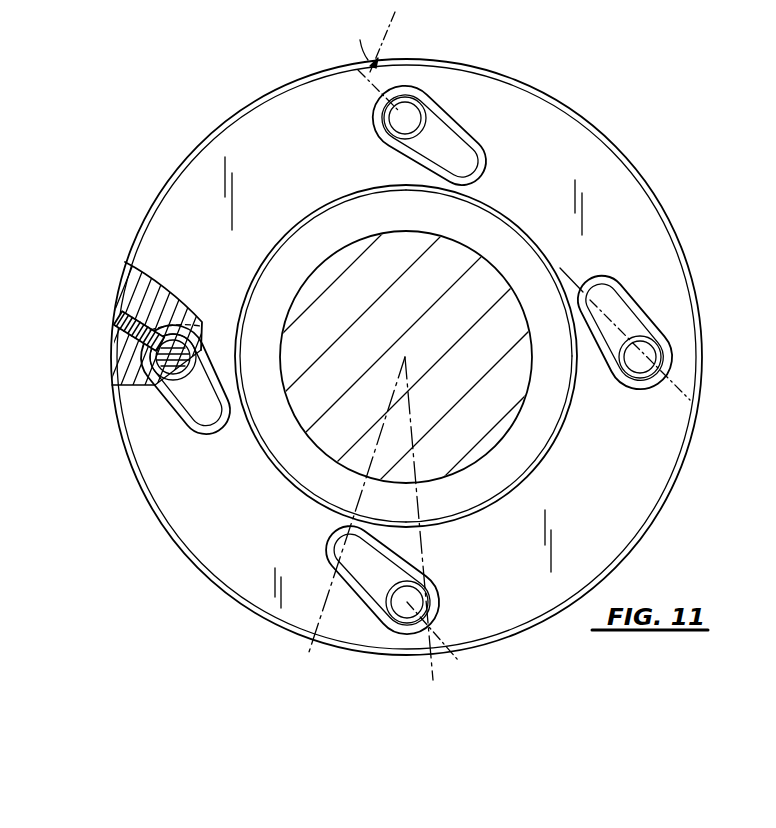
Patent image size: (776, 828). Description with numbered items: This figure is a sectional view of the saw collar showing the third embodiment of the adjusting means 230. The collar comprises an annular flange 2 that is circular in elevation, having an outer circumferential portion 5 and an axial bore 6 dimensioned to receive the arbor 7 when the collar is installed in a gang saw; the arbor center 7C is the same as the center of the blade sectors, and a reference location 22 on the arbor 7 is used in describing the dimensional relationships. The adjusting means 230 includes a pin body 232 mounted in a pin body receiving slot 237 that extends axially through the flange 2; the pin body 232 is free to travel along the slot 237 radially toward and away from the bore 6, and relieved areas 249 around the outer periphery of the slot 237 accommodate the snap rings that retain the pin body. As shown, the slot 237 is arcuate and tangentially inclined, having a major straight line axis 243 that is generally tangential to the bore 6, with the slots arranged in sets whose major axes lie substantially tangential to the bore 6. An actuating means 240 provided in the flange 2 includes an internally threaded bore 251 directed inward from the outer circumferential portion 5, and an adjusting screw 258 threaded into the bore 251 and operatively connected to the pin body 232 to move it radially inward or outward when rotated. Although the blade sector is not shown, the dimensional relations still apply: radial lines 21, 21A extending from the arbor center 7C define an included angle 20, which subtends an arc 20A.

The annular flange 2 is at (643, 221).
The outer circumferential portion 5 is at (683, 478).
The axial bore 6 is at (500, 430).
The arbor 7 is at (505, 395).
The arbor center 7C is at (405, 357).
The included angle 20 is at (400, 428).
The arc 20A is at (325, 538).
The radial line 21 is at (503, 502).
The radial line 21A is at (503, 500).
The reference location 22 is at (331, 200).
The adjusting means 230 is at (428, 82).
The pin body 232 is at (400, 126).
The pin body receiving slot 237 is at (440, 147).
The actuating means 240 is at (140, 345).
The major straight line axis 243 is at (574, 283).
The relieved areas 249 is at (473, 165).
The internally threaded bore 251 is at (86, 300).
The adjusting screw 258 is at (497, 665).